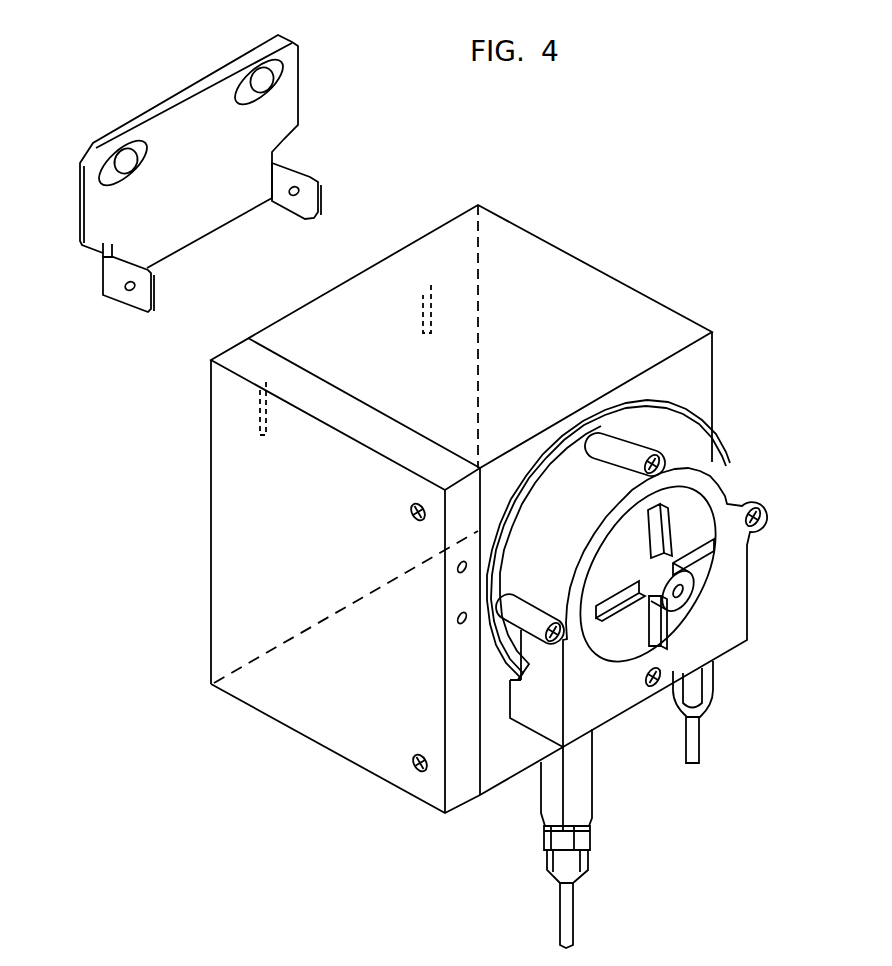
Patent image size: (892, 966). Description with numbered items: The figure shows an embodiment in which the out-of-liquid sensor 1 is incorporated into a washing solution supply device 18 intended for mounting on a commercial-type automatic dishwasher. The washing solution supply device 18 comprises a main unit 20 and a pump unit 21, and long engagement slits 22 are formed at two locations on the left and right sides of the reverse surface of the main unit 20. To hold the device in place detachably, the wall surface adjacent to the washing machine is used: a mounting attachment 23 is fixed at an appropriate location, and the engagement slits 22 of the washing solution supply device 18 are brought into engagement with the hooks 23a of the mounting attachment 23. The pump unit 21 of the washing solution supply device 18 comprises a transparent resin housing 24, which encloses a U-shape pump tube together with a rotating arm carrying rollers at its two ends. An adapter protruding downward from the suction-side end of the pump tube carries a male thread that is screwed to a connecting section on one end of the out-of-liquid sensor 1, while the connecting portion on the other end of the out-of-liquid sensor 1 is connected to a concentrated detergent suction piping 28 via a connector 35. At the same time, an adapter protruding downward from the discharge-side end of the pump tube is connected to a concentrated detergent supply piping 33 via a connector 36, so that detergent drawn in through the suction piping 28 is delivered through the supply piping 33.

The out-of-liquid sensor 1 is at (543, 795).
The washing solution supply device 18 is at (547, 227).
The main unit 20 is at (601, 298).
The pump unit 21 is at (727, 470).
The engagement slits 22 is at (422, 310).
The mounting attachment 23 is at (198, 75).
The hooks 23a is at (297, 163).
The transparent resin housing 24 is at (623, 700).
The concentrated detergent suction piping 28 is at (558, 922).
The concentrated detergent supply piping 33 is at (702, 745).
The connector 35 is at (540, 865).
The connector 36 is at (715, 678).